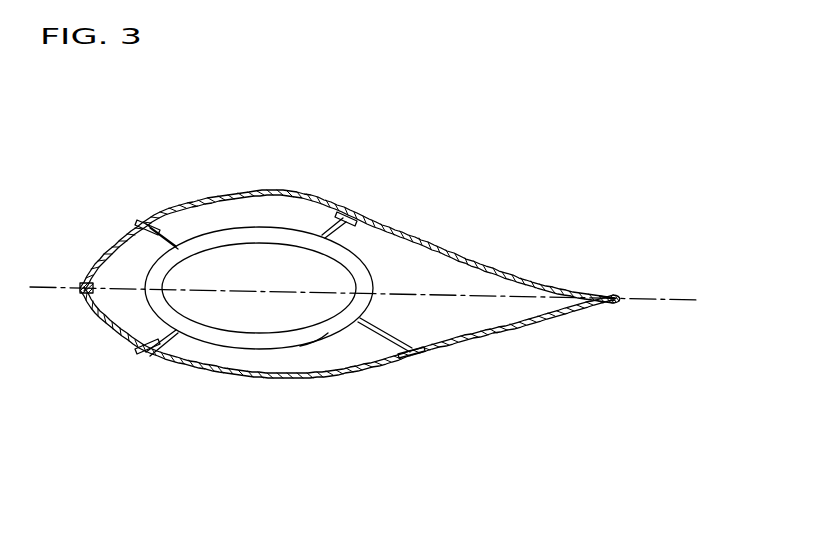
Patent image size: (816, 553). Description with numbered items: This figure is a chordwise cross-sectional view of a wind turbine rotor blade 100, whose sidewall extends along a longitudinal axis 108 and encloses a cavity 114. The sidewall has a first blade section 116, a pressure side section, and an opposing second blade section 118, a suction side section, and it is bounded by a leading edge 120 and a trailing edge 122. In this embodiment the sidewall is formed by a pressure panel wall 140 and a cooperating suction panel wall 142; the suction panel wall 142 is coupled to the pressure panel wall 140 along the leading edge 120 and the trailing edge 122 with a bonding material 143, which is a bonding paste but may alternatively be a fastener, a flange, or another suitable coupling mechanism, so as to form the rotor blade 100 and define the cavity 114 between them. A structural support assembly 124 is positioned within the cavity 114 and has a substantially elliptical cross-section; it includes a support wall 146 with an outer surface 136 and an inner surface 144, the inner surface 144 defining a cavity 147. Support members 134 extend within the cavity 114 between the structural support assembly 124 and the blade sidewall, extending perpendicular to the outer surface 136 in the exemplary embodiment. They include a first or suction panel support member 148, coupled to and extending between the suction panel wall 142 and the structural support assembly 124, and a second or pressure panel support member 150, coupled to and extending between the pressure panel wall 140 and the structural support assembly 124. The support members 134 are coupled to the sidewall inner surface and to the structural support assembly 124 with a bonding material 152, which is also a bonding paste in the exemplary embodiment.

The rotor blade 100 is at (503, 130).
The longitudinal axis 108 is at (655, 300).
The cavity 114 is at (474, 319).
The first blade section 116 is at (267, 143).
The second blade section 118 is at (230, 422).
The leading edge 120 is at (79, 284).
The trailing edge 122 is at (617, 295).
The structural support assembly 124 is at (365, 262).
The support members 134 is at (143, 243).
The outer surface 136 is at (230, 227).
The pressure panel wall 140 is at (260, 190).
The suction panel wall 142 is at (277, 378).
The bonding material 143 is at (80, 291).
The inner surface 144 is at (199, 255).
The support wall 146 is at (328, 332).
The cavity 147 is at (285, 319).
The first support member 148 is at (168, 340).
The second support member 150 is at (325, 220).
The bonding material 152 is at (355, 216).